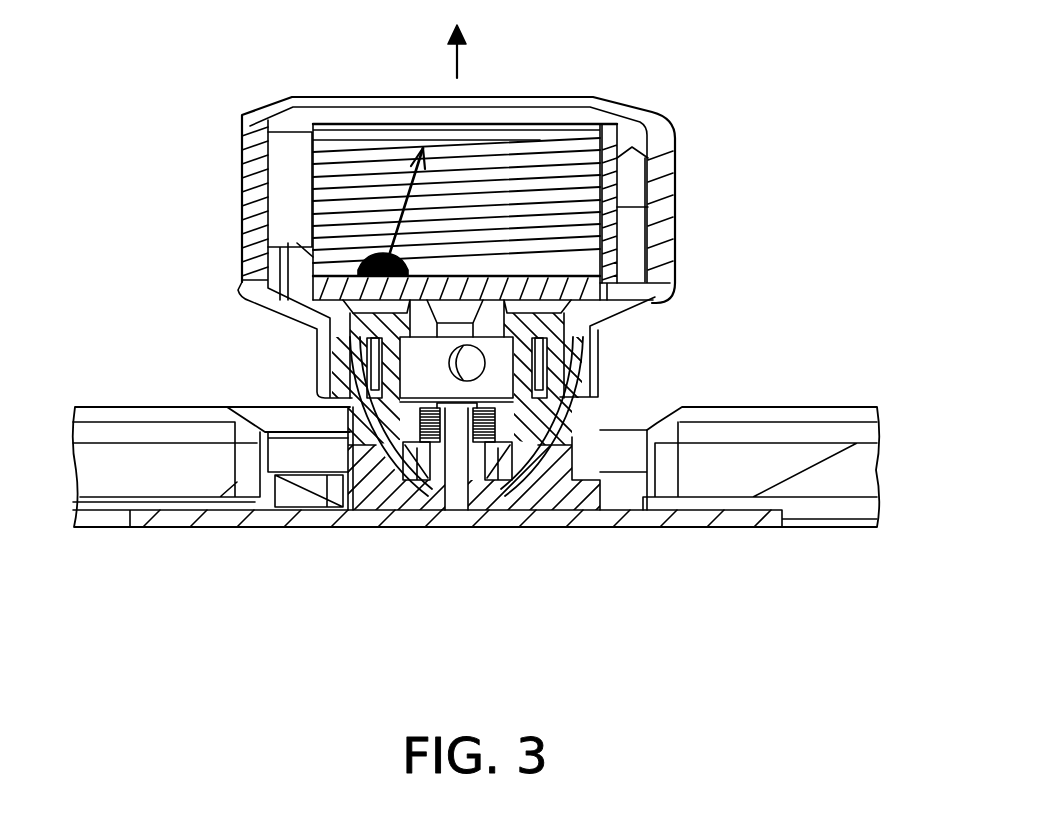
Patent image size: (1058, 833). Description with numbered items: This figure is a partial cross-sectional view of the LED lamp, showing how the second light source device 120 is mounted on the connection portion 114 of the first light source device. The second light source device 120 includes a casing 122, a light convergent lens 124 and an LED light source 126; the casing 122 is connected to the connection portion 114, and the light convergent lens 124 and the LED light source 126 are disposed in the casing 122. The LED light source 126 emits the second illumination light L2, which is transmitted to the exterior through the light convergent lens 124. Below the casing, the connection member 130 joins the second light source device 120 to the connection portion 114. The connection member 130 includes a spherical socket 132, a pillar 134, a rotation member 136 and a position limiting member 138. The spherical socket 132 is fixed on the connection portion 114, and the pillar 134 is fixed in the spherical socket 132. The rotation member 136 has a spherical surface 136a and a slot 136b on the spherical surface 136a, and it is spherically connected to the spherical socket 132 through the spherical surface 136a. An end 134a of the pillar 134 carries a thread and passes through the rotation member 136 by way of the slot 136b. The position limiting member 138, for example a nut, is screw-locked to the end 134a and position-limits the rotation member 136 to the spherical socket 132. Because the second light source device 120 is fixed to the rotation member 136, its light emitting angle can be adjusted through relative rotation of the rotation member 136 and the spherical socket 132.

The connection portion 114 is at (640, 490).
The second light source device 120 is at (660, 92).
The casing 122 is at (662, 150).
The light convergent lens 124 is at (571, 108).
The LED light source 126 is at (345, 253).
The connection member 130 is at (588, 454).
The spherical socket 132 is at (543, 483).
The pillar 134 is at (440, 478).
The end 134a is at (460, 425).
The rotation member 136 is at (366, 455).
The spherical surface 136a is at (392, 482).
The slot 136b is at (483, 495).
The position limiting member 138 is at (495, 423).
The second illumination light L2 is at (415, 180).